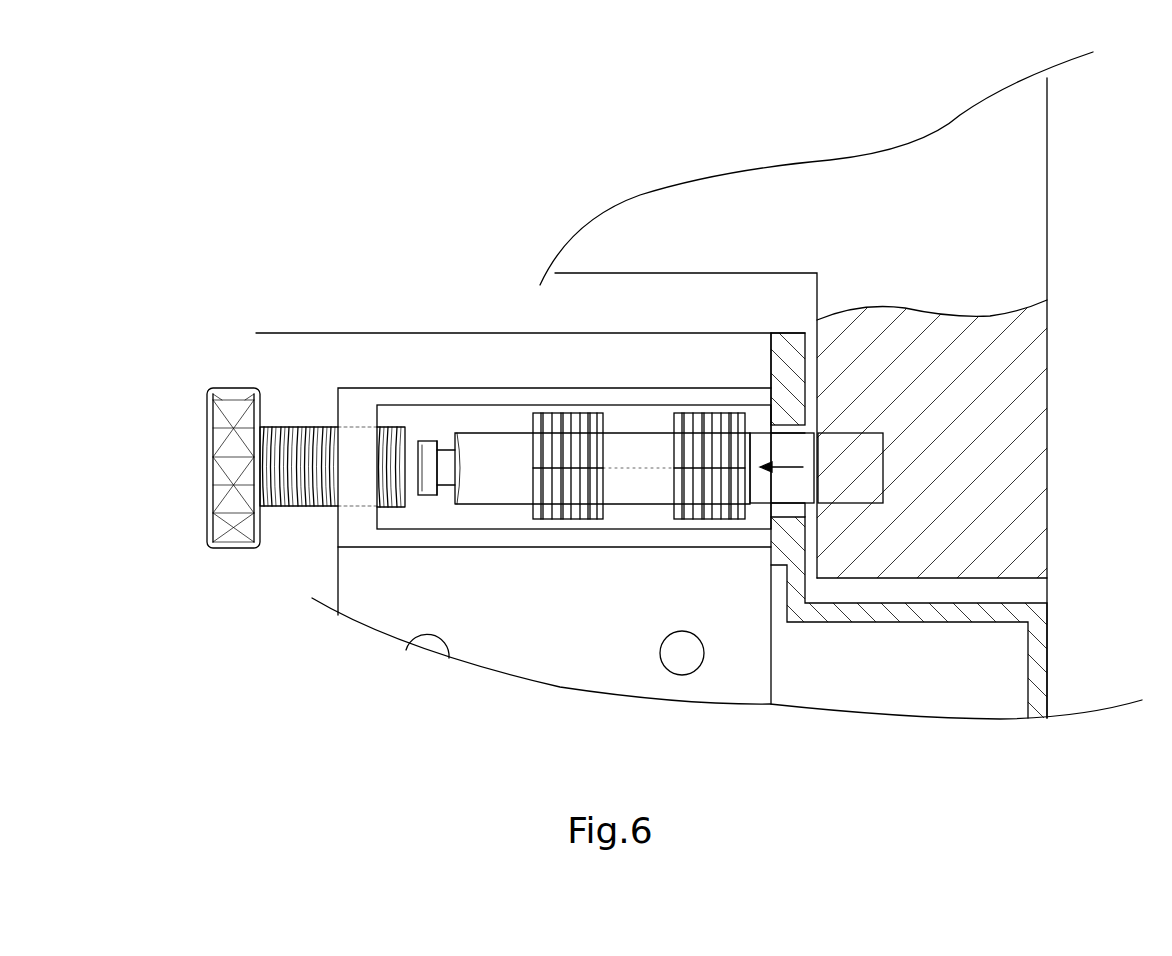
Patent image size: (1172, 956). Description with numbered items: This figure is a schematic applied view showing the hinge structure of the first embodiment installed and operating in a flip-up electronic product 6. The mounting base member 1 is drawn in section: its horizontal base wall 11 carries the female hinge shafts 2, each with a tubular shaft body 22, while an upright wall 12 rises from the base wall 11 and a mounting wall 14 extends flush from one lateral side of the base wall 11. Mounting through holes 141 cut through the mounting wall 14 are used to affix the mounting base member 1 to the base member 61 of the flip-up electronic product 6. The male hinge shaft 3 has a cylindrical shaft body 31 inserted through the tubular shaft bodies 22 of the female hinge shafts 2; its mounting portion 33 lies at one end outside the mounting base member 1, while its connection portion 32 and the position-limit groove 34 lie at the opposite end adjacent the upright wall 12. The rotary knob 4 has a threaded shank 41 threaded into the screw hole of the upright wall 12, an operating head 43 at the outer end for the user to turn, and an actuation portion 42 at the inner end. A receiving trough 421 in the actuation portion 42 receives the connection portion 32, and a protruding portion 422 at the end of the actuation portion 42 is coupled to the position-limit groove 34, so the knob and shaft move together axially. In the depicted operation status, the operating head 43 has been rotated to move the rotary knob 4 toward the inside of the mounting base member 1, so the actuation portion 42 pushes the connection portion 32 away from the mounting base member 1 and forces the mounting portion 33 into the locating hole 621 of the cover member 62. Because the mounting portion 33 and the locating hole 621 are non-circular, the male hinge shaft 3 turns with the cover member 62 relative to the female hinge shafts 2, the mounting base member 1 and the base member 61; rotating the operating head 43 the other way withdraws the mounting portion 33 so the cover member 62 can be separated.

The mounting base member 1 is at (333, 580).
The base wall 11 is at (693, 515).
The upright wall 12 is at (358, 440).
The mounting wall 14 is at (370, 627).
The mounting through holes 141 is at (450, 655).
The female hinge shafts 2 is at (648, 406).
The tubular shaft body 22 is at (598, 420).
The male hinge shaft 3 is at (602, 523).
The cylindrical shaft body 31 is at (620, 490).
The connection portion 32 is at (420, 492).
The mounting portion 33 is at (790, 495).
The position-limit groove 34 is at (443, 484).
The rotary knob 4 is at (332, 446).
The threaded shank 41 is at (296, 440).
The actuation portion 42 is at (437, 446).
The receiving trough 421 is at (423, 430).
The protruding portion 422 is at (452, 445).
The operating head 43 is at (207, 532).
The flip-up electronic product 6 is at (1075, 333).
The base member 61 is at (1048, 640).
The cover member 62 is at (1032, 488).
The locating hole 621 is at (857, 433).